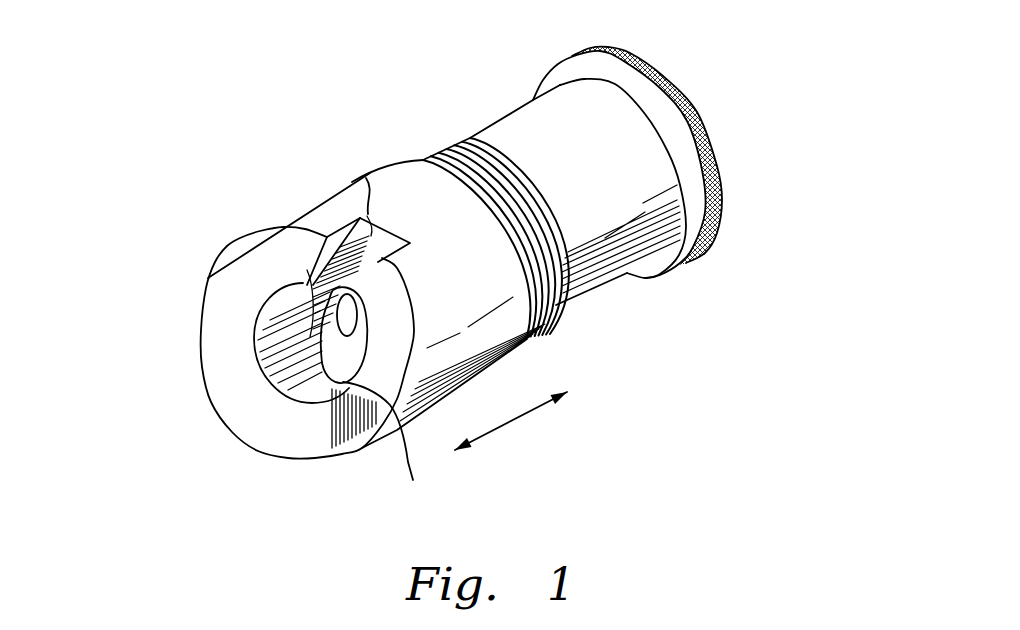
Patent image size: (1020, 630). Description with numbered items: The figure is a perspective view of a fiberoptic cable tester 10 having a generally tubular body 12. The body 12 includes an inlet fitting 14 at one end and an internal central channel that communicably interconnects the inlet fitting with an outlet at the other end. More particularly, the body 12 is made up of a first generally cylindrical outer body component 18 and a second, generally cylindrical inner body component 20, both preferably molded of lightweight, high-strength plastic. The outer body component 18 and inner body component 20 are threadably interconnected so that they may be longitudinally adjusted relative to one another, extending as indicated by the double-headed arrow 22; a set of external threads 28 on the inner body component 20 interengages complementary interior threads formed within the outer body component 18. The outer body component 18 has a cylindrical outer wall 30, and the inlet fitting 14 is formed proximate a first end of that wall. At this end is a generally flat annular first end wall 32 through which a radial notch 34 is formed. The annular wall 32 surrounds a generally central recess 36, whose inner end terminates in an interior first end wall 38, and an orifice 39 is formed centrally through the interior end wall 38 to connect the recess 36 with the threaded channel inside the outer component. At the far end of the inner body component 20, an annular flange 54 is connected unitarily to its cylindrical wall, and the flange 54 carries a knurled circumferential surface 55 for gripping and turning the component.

The fiberoptic cable tester 10 is at (278, 146).
The tubular body 12 is at (368, 166).
The inlet fitting 14 is at (323, 313).
The outer body component 18 is at (290, 239).
The inner body component 20 is at (603, 252).
The double-headed arrow 22 is at (512, 428).
The external threads 28 is at (547, 328).
The cylindrical outer wall 30 is at (295, 222).
The annular first end wall 32 is at (348, 427).
The radial notch 34 is at (355, 195).
The central recess 36 is at (254, 338).
The interior first end wall 38 is at (323, 386).
The orifice 39 is at (395, 447).
The annular flange 54 is at (685, 95).
The knurled circumferential surface 55 is at (640, 65).